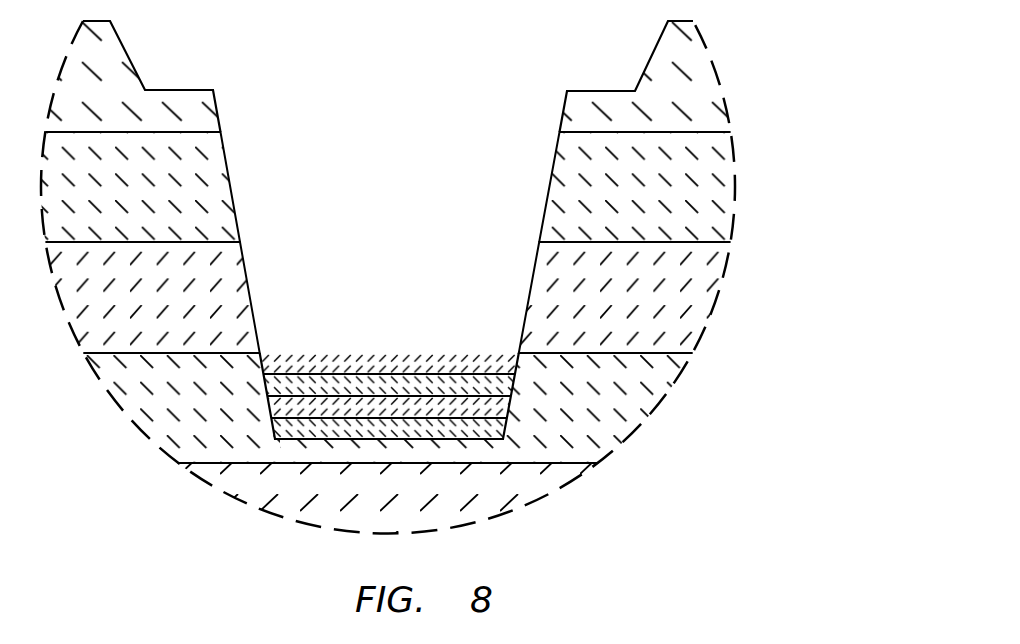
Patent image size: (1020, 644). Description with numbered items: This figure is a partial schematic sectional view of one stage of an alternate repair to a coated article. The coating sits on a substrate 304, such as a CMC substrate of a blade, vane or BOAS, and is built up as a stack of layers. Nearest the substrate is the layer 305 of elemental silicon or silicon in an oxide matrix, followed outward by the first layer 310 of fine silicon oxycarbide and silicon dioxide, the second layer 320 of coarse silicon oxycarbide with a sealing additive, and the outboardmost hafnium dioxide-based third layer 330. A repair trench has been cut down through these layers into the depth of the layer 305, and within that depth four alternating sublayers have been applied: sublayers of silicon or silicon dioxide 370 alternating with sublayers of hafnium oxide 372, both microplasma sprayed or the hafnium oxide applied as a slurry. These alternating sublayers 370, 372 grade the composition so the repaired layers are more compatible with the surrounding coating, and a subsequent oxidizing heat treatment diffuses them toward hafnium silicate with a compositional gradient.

The substrate 304 is at (534, 489).
The layer 305 is at (635, 400).
The first layer 310 is at (685, 293).
The second layer 320 is at (693, 185).
The third layer 330 is at (683, 90).
The sublayers of silicon 370 is at (408, 430).
The sublayers of hafnium oxide 372 is at (337, 410).